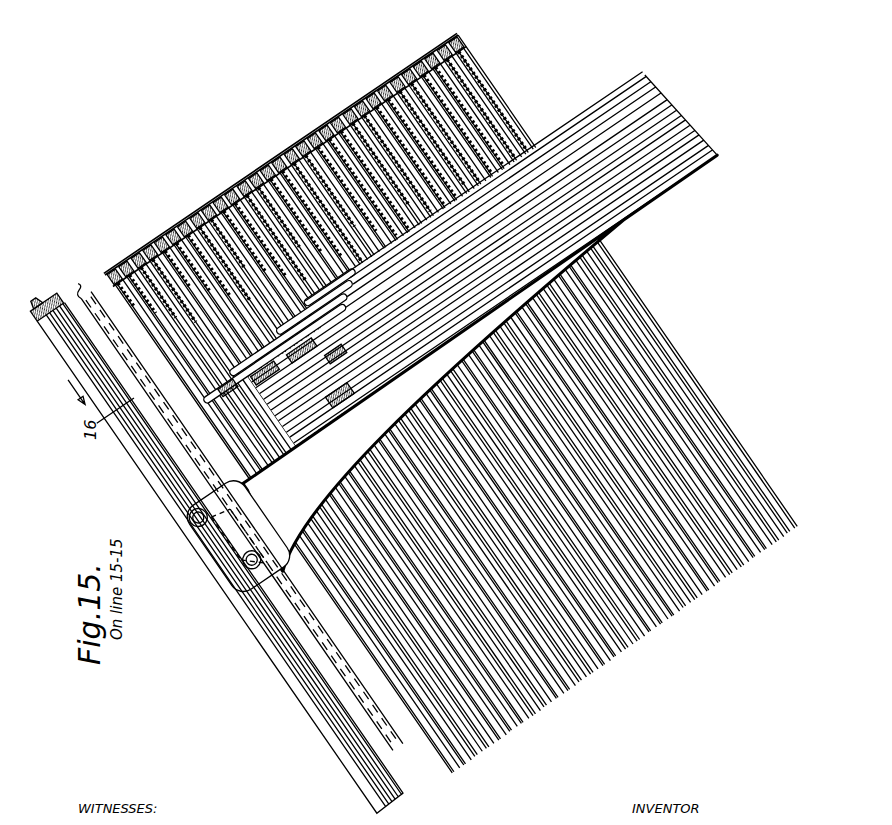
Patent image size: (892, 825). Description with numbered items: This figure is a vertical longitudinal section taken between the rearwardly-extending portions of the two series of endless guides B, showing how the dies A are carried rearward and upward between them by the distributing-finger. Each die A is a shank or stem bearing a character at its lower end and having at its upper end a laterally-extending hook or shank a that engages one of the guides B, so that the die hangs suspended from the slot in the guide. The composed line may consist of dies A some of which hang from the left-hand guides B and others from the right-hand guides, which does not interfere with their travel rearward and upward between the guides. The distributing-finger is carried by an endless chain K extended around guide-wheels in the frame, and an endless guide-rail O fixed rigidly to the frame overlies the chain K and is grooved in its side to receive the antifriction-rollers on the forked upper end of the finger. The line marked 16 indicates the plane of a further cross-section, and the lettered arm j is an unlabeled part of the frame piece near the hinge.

The endless guide B is at (443, 387).
The die A is at (518, 263).
The hook or shank a is at (342, 414).
The frame arm j is at (478, 375).
The endless guide-rail O is at (202, 541).
The endless chain K is at (210, 519).
The section line 16 is at (100, 389).